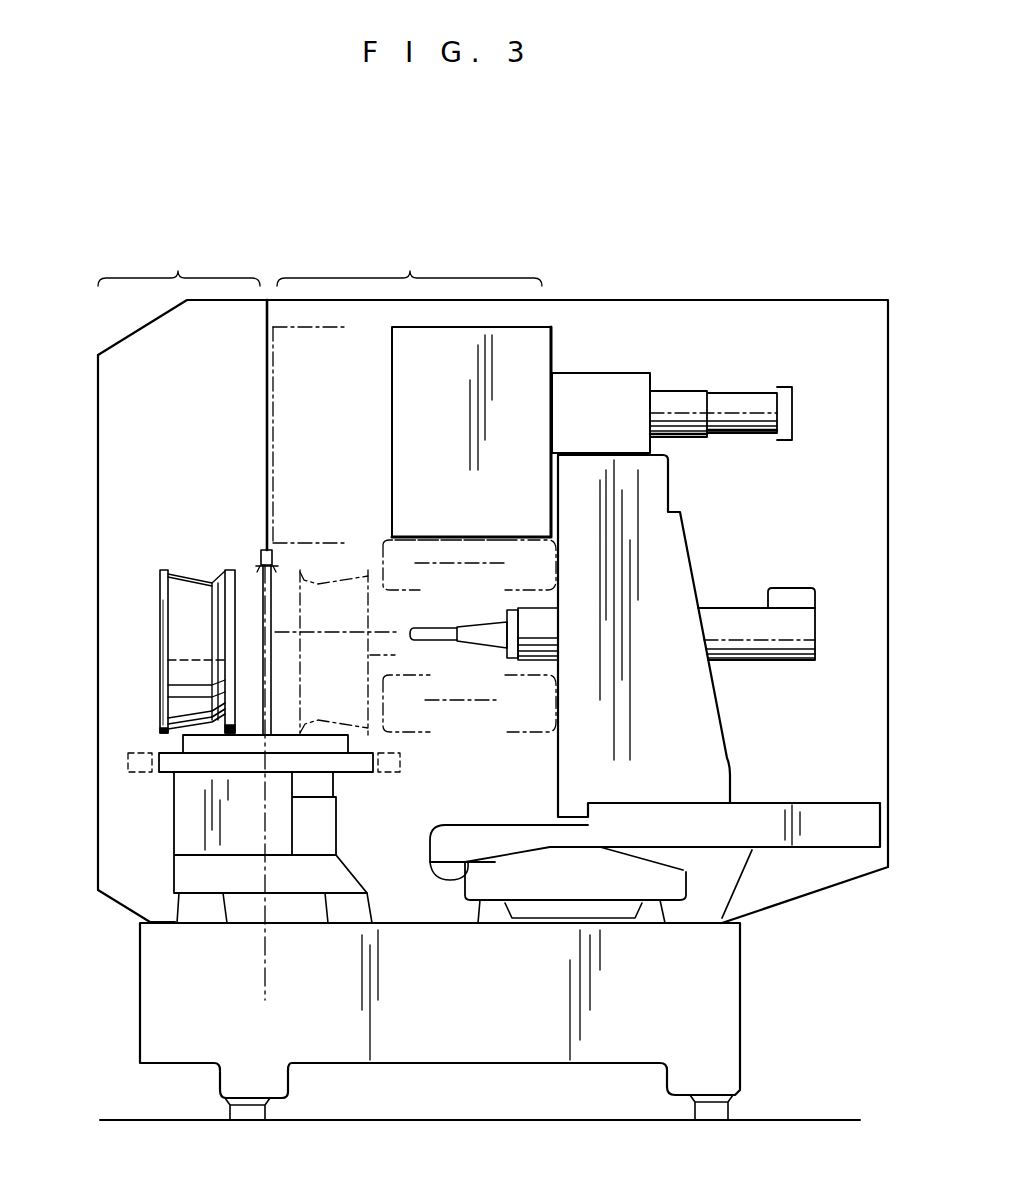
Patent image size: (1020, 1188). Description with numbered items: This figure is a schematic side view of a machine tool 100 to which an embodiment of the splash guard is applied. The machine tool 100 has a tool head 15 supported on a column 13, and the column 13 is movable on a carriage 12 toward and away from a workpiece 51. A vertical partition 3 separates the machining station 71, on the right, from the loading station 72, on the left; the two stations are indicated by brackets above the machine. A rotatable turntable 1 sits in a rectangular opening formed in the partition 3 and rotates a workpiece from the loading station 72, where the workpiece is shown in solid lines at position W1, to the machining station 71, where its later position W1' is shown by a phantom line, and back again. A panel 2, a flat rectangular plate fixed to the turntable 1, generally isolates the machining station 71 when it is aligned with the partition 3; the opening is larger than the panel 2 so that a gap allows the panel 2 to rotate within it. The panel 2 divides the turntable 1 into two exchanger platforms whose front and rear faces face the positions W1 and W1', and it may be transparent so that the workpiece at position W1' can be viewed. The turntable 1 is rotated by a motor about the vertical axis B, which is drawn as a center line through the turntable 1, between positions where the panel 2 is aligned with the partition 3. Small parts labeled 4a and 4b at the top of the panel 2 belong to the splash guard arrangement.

The machine tool 100 is at (697, 280).
The loading station 72 is at (179, 258).
The machining station 71 is at (409, 258).
The partition 3 is at (267, 460).
The holder block 4b is at (262, 550).
The holder flange 4a is at (277, 558).
The panel 2 is at (265, 583).
The workpiece position W1 is at (136, 651).
The workpiece 51 is at (178, 672).
The turntable 1 is at (190, 765).
The axis B is at (264, 801).
The workpiece position W1' is at (379, 652).
The tool head 15 is at (437, 630).
The column 13 is at (705, 733).
The carriage 12 is at (683, 857).